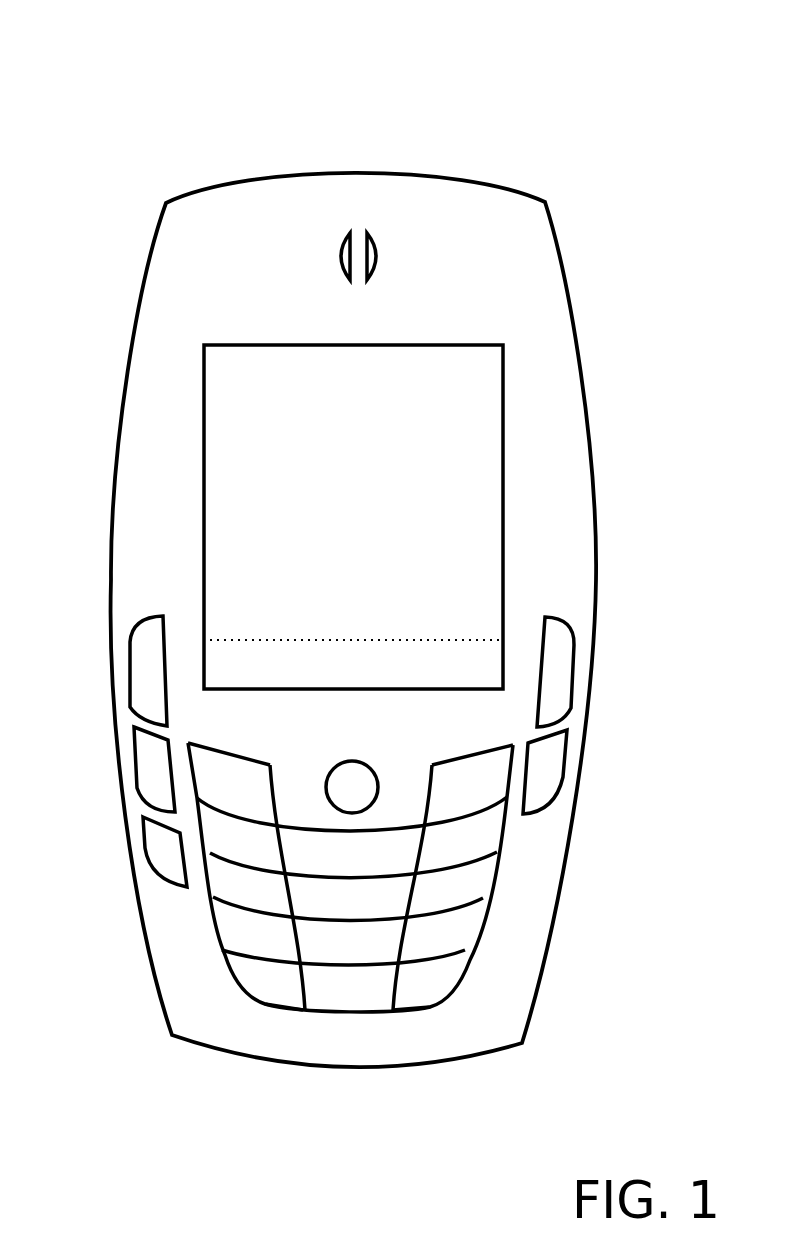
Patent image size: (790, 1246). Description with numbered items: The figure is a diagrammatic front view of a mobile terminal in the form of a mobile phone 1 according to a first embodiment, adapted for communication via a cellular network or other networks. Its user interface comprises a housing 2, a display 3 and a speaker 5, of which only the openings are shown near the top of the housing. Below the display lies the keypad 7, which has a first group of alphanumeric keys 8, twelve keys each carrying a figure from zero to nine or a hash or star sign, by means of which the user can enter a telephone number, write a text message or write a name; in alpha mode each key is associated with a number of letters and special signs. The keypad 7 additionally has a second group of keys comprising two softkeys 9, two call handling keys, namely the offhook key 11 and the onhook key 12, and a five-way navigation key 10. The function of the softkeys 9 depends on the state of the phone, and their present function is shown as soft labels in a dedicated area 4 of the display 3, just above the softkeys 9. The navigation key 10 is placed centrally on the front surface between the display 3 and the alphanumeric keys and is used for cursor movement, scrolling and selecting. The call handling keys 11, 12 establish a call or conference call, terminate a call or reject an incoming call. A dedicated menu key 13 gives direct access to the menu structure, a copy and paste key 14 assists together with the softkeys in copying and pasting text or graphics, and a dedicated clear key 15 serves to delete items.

The mobile phone 1 is at (545, 137).
The housing 2 is at (572, 297).
The display 3 is at (455, 480).
The dedicated area 4 is at (440, 665).
The speaker 5 is at (367, 232).
The keypad 7 is at (218, 975).
The alphanumeric keys 8 is at (263, 992).
The softkeys 9 is at (243, 785).
The navigation key 10 is at (352, 787).
The offhook key 11 is at (150, 653).
The onhook key 12 is at (563, 697).
The menu key 13 is at (162, 758).
The copy and paste key 14 is at (167, 845).
The clear key 15 is at (547, 773).